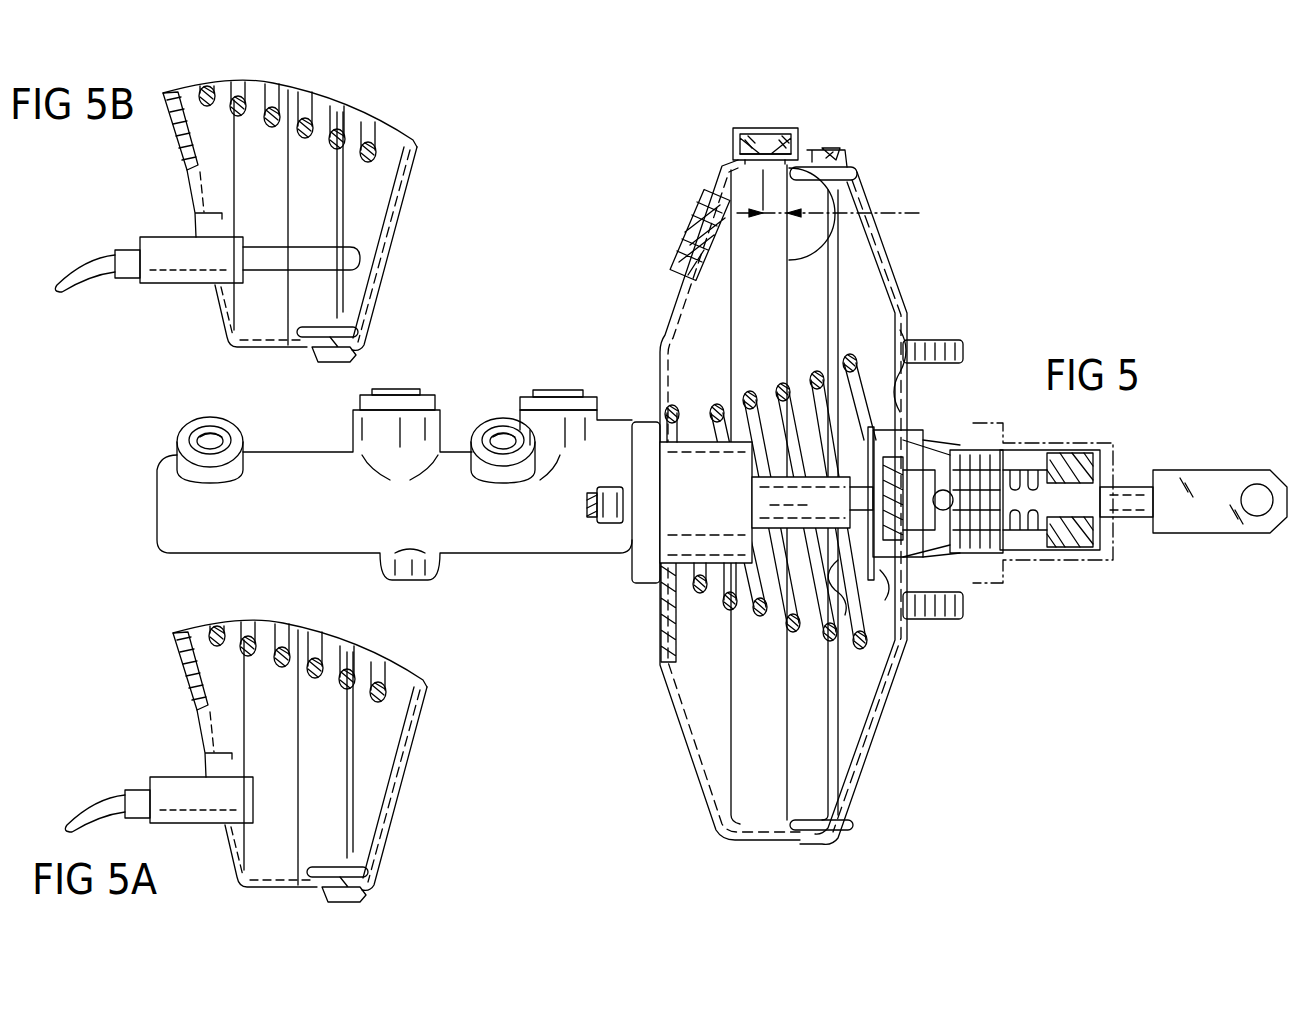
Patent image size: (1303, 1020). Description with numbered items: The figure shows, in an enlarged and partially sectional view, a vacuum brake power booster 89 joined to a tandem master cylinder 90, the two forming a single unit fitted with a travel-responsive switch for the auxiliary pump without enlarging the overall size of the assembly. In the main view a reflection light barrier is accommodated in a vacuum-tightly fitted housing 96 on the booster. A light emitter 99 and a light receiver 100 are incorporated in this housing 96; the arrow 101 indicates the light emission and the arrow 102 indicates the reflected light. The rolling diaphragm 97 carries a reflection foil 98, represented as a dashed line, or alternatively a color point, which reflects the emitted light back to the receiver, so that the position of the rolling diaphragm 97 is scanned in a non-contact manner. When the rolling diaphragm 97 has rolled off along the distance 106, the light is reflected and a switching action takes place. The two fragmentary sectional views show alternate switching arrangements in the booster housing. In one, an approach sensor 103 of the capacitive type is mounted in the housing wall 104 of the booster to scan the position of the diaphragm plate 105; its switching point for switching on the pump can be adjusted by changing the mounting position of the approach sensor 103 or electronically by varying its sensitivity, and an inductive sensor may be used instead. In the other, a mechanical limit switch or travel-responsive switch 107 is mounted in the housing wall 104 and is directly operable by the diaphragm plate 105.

In FIG. 5, the vacuum brake power booster 89 is at (924, 303).
In FIG. 5, the tandem master cylinder 90 is at (291, 446).
In FIG. 5, the housing 96 is at (735, 143).
In FIG. 5, the rolling diaphragm 97 is at (838, 186).
In FIG. 5, the reflection foil 98 is at (843, 201).
In FIG. 5, the light emitter 99 is at (740, 128).
In FIG. 5, the light receiver 100 is at (783, 128).
In FIG. 5, the arrow indicating light emission 101 is at (735, 152).
In FIG. 5, the arrow indicating reflected light 102 is at (830, 155).
In FIG. 5A, the approach sensor 103 is at (160, 773).
In FIG. 5B, the housing wall 104 is at (178, 192).
In FIG. 5A, the housing wall 104 is at (181, 727).
In FIG. 5, the housing wall 104 is at (668, 680).
In FIG. 5B, the diaphragm plate 105 is at (398, 182).
In FIG. 5A, the diaphragm plate 105 is at (400, 743).
In FIG. 5, the diaphragm plate 105 is at (888, 713).
In FIG. 5, the distance 106 is at (835, 258).
In FIG. 5B, the mechanical limit switch 107 is at (360, 293).